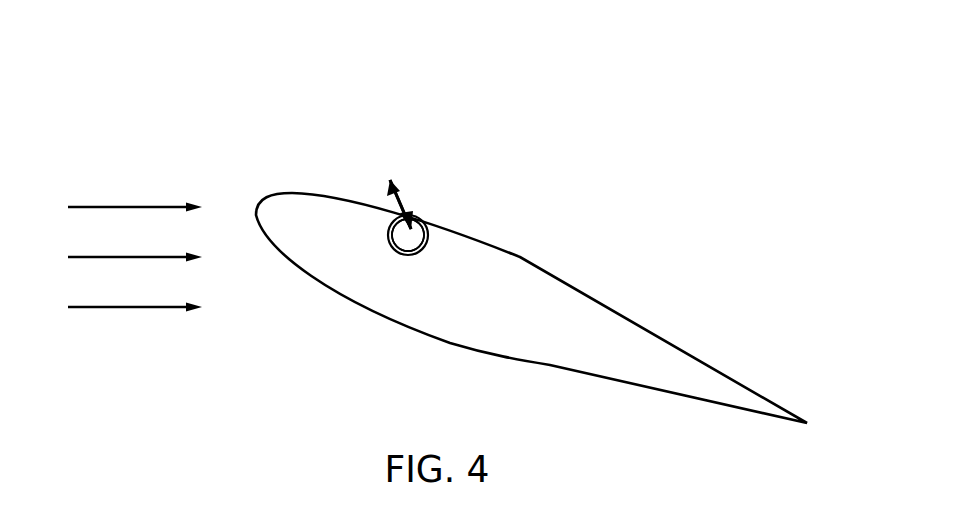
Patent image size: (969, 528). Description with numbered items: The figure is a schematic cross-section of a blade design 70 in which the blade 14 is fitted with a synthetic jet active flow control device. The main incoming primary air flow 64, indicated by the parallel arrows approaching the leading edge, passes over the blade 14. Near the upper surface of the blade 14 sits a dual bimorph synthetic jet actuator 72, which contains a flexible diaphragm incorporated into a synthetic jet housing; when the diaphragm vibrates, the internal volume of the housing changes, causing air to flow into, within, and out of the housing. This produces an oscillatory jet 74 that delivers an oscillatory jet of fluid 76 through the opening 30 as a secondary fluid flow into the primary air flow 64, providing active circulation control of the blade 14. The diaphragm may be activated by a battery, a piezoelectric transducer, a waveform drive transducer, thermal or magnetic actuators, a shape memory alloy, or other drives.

The blade 14 is at (638, 337).
The opening 30 is at (415, 215).
The main incoming primary air flow 64 is at (142, 205).
The blade design 70 is at (637, 145).
The dual bimorph synthetic jet actuator 72 is at (430, 228).
The oscillatory jet 74 is at (400, 213).
The oscillatory jet of fluid 76 is at (392, 192).